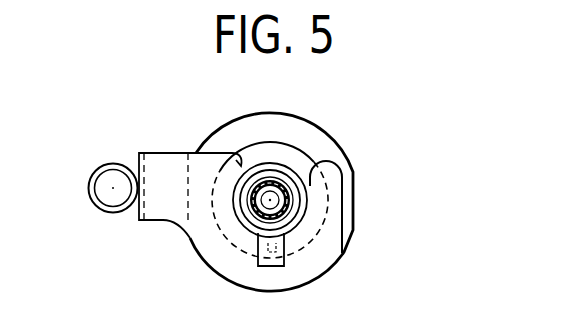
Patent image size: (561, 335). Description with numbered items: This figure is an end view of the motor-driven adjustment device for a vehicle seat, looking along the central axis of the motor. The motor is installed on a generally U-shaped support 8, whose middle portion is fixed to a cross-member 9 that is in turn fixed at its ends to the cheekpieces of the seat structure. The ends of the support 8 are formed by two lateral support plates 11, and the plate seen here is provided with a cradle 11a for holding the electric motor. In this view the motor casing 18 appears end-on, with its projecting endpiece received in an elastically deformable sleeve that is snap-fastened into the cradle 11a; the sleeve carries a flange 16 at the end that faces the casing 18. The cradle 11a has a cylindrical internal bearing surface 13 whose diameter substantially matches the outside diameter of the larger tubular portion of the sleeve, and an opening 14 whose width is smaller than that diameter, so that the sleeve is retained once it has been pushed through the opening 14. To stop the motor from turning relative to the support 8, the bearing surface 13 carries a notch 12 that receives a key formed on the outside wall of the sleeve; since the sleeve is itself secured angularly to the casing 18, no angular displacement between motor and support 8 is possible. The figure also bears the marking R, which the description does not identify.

The support 8 is at (165, 153).
The cross-member 9 is at (89, 187).
The support plate 11 is at (315, 210).
The cradle 11a is at (307, 182).
The notch 12 is at (258, 263).
The cylindrical internal bearing surface 13 is at (306, 220).
The opening 14 is at (242, 163).
The flange 16 is at (261, 157).
The casing 18 is at (303, 138).
The rotation direction R is at (363, 135).